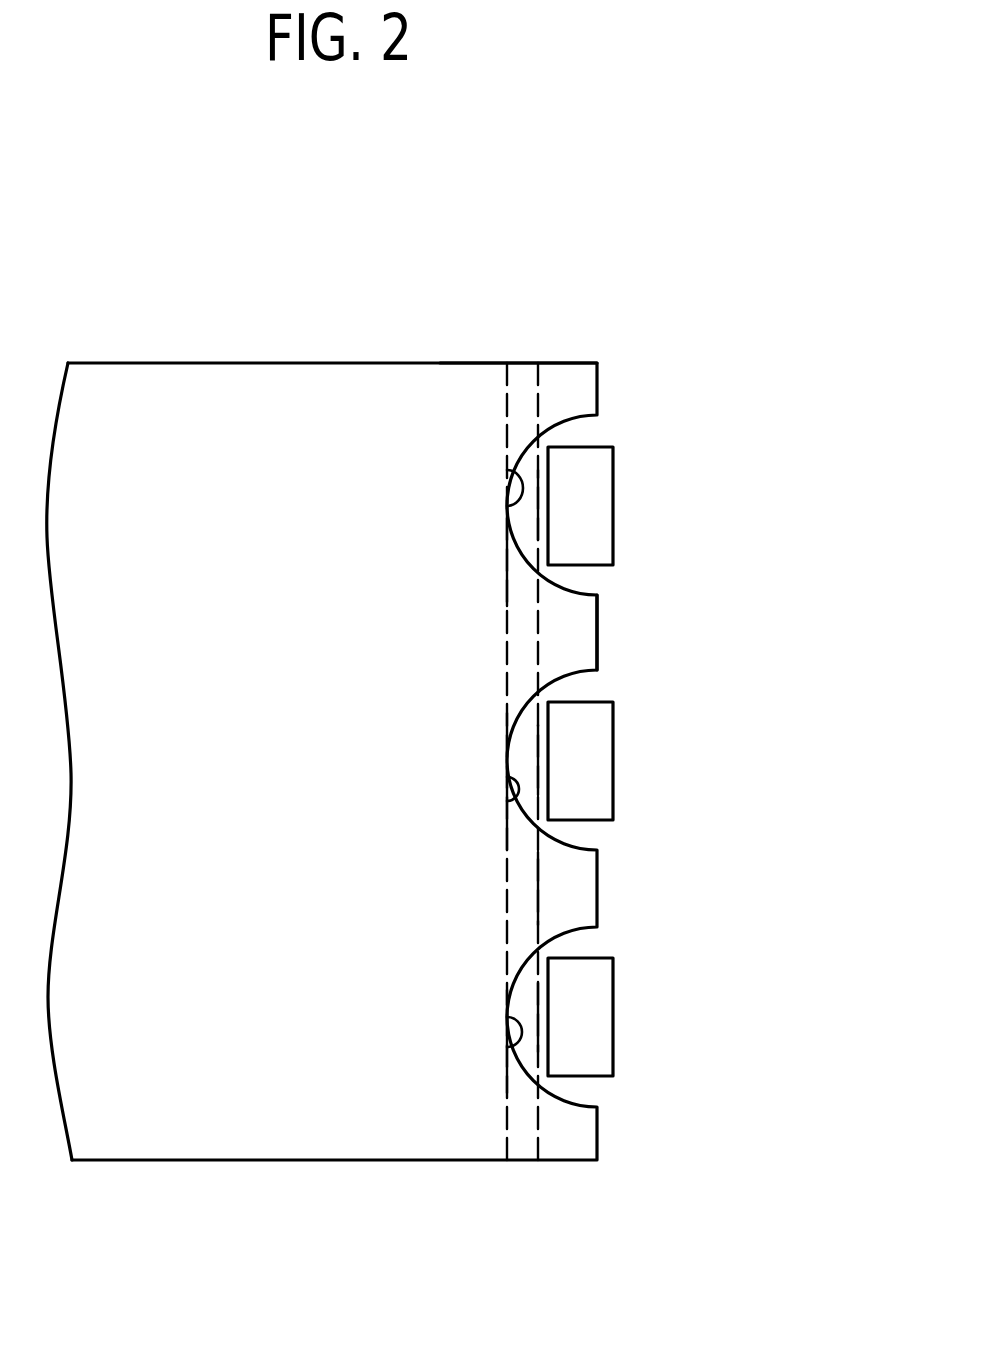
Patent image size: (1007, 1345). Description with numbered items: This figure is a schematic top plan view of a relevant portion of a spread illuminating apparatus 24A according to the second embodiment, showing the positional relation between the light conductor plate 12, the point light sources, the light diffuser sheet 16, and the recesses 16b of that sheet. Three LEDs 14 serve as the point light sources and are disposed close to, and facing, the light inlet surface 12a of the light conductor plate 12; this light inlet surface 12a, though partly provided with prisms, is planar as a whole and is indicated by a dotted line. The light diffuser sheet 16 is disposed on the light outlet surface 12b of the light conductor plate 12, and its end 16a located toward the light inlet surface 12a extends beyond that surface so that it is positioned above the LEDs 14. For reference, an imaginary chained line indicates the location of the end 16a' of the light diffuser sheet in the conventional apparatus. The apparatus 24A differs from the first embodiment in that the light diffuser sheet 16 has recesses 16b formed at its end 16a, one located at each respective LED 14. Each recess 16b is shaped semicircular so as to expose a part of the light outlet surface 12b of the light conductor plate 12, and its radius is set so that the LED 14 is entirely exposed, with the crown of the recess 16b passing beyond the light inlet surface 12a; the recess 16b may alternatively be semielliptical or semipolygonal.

The light conductor plate 12 is at (453, 1140).
The light inlet surface 12a is at (539, 874).
The light outlet surface 12b is at (528, 533).
The LED 14 is at (613, 492).
The light diffuser sheet 16 is at (233, 363).
The end of the light diffuser sheet 16a is at (717, 649).
The end of the light diffuser sheet of the conventional apparatus 16a' is at (687, 761).
The recess 16b is at (507, 470).
The spread illuminating apparatus 24A is at (478, 332).